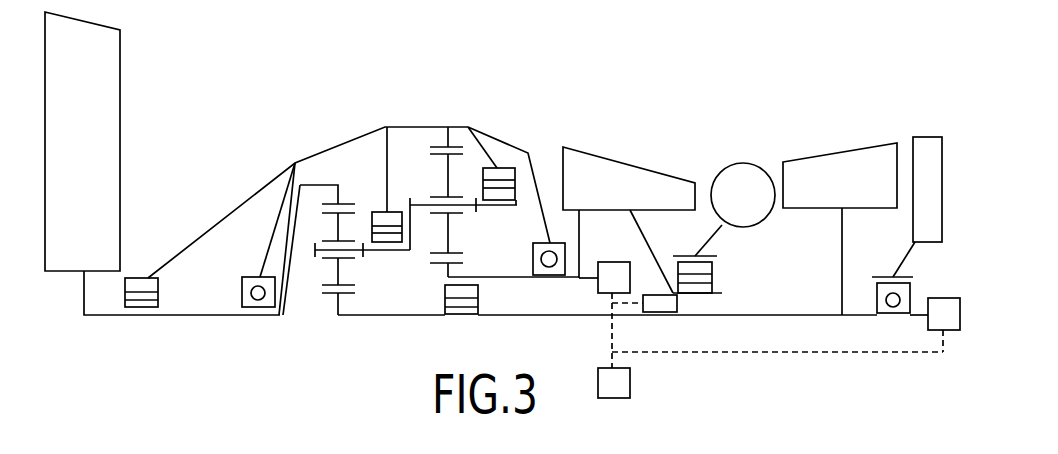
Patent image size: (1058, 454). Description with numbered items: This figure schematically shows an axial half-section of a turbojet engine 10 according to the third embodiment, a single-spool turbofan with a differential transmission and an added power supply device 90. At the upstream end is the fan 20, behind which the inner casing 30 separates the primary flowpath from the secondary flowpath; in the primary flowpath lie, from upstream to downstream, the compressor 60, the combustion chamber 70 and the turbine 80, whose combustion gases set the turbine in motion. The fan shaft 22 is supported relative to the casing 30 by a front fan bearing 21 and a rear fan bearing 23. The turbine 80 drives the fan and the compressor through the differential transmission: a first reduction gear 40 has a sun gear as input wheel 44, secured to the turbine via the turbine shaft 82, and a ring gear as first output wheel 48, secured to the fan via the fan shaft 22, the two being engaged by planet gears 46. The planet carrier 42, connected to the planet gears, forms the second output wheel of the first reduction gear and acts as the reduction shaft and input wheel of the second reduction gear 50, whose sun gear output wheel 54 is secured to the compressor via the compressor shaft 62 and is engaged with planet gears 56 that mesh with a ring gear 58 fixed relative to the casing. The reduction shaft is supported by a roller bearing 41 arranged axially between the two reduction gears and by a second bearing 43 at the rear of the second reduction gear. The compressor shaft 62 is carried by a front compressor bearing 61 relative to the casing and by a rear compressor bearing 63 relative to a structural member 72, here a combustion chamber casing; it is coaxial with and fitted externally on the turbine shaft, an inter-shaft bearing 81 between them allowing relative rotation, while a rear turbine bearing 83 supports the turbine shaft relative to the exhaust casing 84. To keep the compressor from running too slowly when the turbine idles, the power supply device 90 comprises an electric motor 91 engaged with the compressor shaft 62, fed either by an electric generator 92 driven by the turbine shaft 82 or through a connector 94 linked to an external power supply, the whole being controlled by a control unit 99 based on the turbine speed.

The turbojet engine 10 is at (812, 68).
The fan 20 is at (100, 148).
The front fan bearing 21 is at (135, 286).
The fan shaft 22 is at (192, 318).
The rear fan bearing 23 is at (243, 286).
The inner casing 30 is at (331, 149).
The first reduction gear 40 is at (323, 302).
The bearing 41 is at (376, 216).
The planet carrier 42 is at (382, 248).
The second bearing 43 is at (511, 168).
The input wheel 44 is at (348, 295).
The planet gears 46 is at (334, 280).
The first output wheel 48 is at (348, 203).
The second reduction gear 50 is at (420, 150).
The output wheel 54 is at (460, 270).
The planet gears 56 is at (450, 230).
The ring gear 58 is at (455, 145).
The compressor 60 is at (632, 172).
The front compressor bearing 61 is at (541, 246).
The compressor shaft 62 is at (632, 220).
The rear compressor bearing 63 is at (712, 273).
The combustion chamber 70 is at (743, 173).
The structural member 72 is at (697, 253).
The turbine 80 is at (843, 160).
The inter-shaft bearing 81 is at (460, 310).
The turbine shaft 82 is at (760, 316).
The rear turbine bearing 83 is at (888, 313).
The exhaust casing 84 is at (928, 148).
The power supply device 90 is at (592, 292).
The electric motor 91 is at (610, 273).
The electric generator 92 is at (942, 306).
The connector 94 is at (620, 385).
The control unit 99 is at (662, 305).